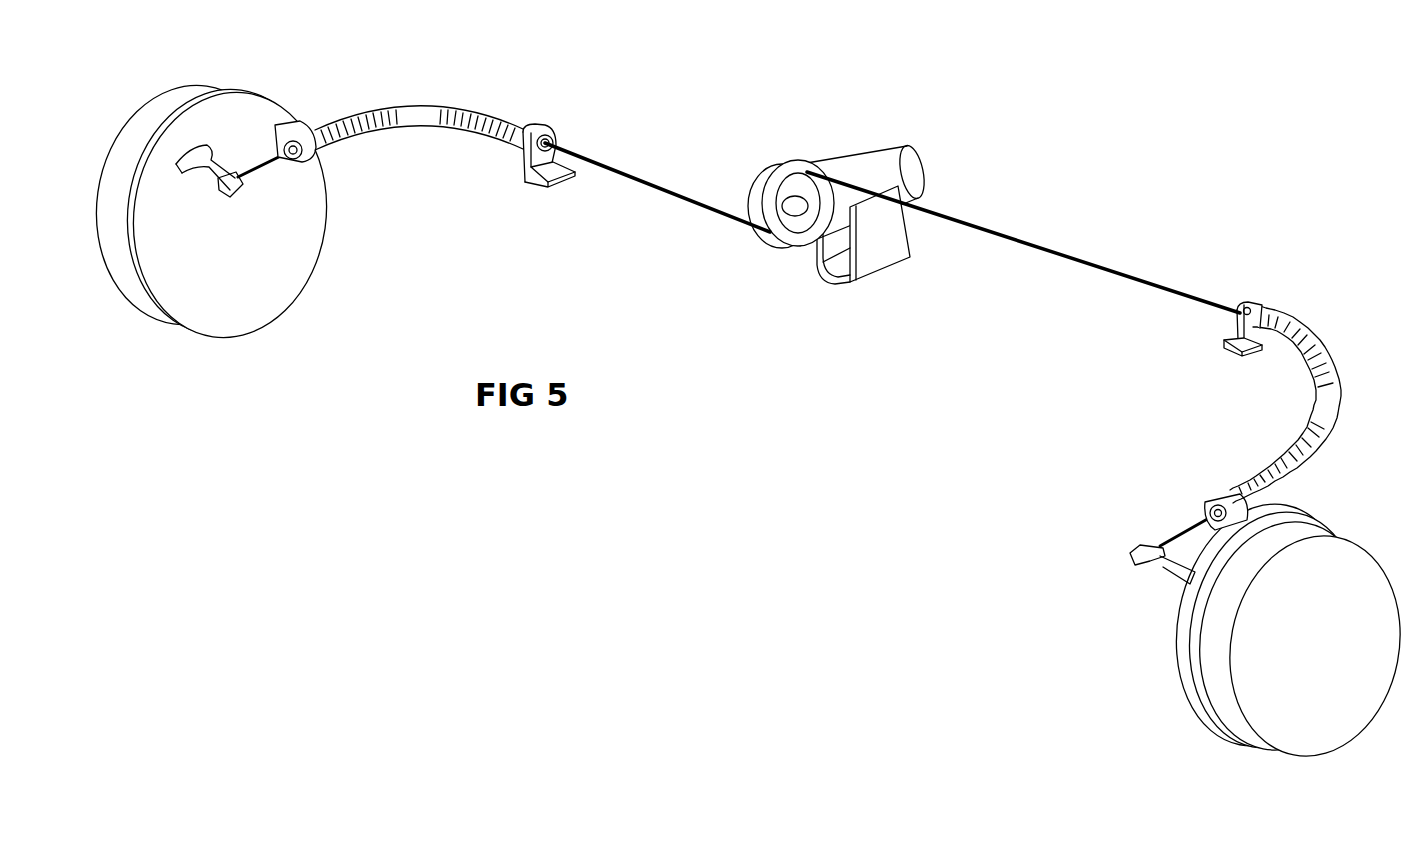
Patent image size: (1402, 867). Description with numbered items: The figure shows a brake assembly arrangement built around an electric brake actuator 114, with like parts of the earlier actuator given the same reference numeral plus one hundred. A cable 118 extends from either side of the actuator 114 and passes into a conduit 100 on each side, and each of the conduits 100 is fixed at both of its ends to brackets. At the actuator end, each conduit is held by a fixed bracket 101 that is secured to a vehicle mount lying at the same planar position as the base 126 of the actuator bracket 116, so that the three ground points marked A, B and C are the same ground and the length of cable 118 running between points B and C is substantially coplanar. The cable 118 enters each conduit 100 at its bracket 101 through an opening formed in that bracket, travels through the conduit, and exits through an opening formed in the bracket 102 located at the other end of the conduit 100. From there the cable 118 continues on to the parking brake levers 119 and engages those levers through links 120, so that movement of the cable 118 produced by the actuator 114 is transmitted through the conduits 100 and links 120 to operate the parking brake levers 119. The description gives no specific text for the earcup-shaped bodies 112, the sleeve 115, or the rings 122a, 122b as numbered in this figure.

The conduit 100 is at (440, 112).
The bracket 101 is at (562, 128).
The bracket 102 is at (328, 148).
The earcup 112 is at (124, 270).
The actuator 114 is at (840, 206).
The cylindrical sleeve 115 is at (867, 167).
The actuator bracket 116 is at (890, 235).
The cable 118 is at (622, 165).
The parking brake lever 119 is at (219, 168).
The link 120 is at (214, 186).
The clamp ring 122a is at (770, 200).
The clamp ring 122b is at (787, 240).
The base 126 is at (820, 277).